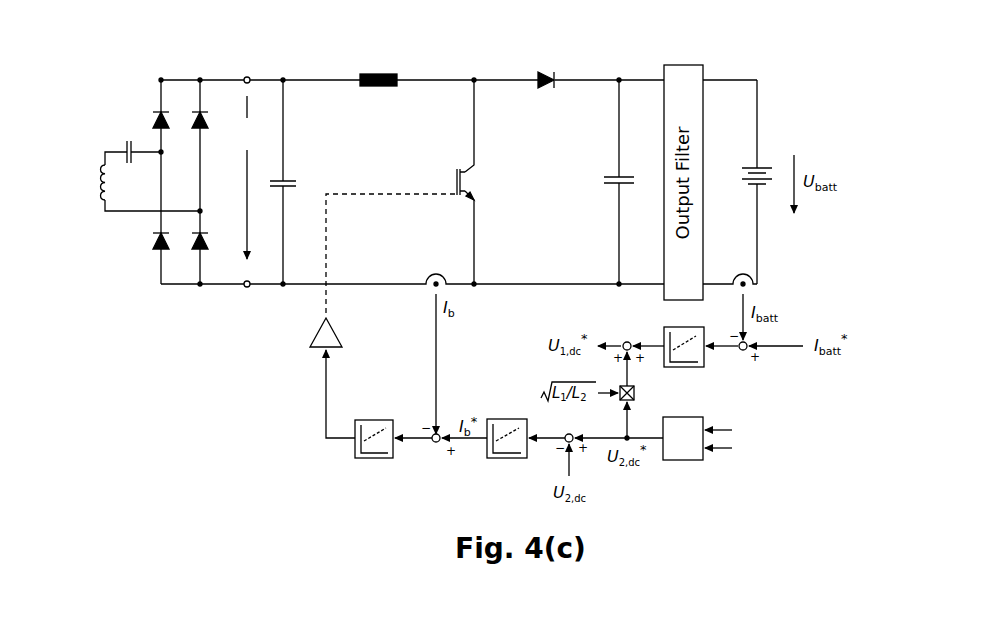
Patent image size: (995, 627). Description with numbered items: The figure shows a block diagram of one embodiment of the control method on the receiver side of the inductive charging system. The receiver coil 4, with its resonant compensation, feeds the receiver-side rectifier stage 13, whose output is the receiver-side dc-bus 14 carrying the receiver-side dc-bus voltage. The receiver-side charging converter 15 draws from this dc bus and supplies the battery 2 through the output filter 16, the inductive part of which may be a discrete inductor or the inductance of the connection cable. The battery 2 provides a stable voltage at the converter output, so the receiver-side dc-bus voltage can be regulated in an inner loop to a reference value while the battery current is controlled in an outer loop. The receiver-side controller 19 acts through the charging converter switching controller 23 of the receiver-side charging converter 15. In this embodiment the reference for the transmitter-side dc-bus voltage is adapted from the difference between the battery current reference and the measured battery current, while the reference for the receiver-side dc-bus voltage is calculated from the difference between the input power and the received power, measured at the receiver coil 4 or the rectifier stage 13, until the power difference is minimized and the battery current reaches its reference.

The battery 2 is at (768, 222).
The receiver coil 4 is at (109, 135).
The receiver-side rectifier stage 13 is at (187, 66).
The receiver-side dc-bus 14 is at (239, 66).
The receiver-side charging converter 15 is at (475, 66).
The output filter 16 is at (624, 70).
The receiver-side controller 19 is at (713, 456).
The charging converter switching controller 23 is at (300, 348).